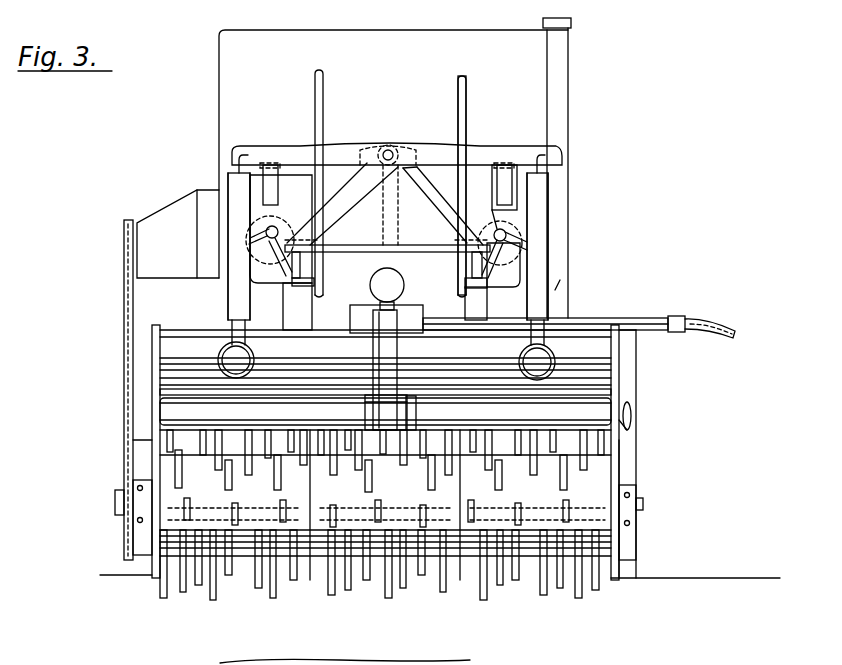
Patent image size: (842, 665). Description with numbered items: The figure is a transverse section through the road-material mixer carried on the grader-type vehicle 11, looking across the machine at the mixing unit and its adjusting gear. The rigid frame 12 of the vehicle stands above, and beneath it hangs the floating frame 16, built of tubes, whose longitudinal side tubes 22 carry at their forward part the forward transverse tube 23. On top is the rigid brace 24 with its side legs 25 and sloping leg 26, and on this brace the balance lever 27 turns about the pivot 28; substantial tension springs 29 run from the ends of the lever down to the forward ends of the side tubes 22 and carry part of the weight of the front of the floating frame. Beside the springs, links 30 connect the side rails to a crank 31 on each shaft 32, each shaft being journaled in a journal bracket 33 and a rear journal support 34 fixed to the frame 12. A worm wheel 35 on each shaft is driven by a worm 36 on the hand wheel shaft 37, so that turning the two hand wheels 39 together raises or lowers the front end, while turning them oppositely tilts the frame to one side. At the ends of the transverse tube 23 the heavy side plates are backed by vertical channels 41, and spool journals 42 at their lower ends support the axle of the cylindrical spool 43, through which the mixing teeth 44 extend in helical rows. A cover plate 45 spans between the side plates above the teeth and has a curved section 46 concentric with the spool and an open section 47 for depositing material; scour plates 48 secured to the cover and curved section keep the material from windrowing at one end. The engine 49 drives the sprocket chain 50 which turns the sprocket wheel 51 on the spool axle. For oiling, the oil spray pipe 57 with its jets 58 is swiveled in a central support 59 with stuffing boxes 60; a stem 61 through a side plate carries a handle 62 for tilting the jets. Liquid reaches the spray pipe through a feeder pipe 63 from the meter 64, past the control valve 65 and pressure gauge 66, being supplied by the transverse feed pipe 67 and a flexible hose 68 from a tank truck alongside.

The vehicle 11 is at (628, 184).
The frame 12 is at (470, 262).
The floating frame 16 is at (650, 298).
The longitudinal side tubes 22 is at (518, 361).
The forward transverse tube 23 is at (594, 365).
The rigid brace 24 is at (349, 160).
The side legs 25 is at (338, 221).
The sloping leg 26 is at (383, 228).
The balance lever 27 is at (420, 153).
The pivot 28 is at (388, 150).
The tension springs 29 is at (548, 216).
The links 30 is at (560, 276).
The crank 31 is at (553, 233).
The shaft 32 is at (279, 252).
The journal bracket 33 is at (498, 262).
The rear journal support 34 is at (490, 205).
The worm wheel 35 is at (502, 218).
The worm 36 is at (510, 166).
The hand wheel shaft 37 is at (488, 178).
The hand wheels 39 is at (465, 104).
The vertical channels 41 is at (630, 458).
The spool journals 42 is at (637, 508).
The cylindrical spool 43 is at (606, 518).
The mixing teeth 44 is at (628, 526).
The cover plate 45 is at (270, 384).
The curved section 46 is at (190, 478).
The open section 47 is at (368, 508).
The scour plates 48 is at (465, 478).
The engine 49 is at (578, 72).
The sprocket chain 50 is at (124, 356).
The sprocket wheel 51 is at (125, 545).
The oil spray pipe 57 is at (385, 414).
The jets 58 is at (427, 413).
The central support 59 is at (365, 384).
The stuffing boxes 60 is at (415, 395).
The stem 61 is at (632, 412).
The handle 62 is at (622, 430).
The feeder pipe 63 is at (400, 320).
The meter 64 is at (372, 333).
The control valve 65 is at (372, 305).
The pressure gauge 66 is at (396, 280).
The transverse feed pipe 67 is at (582, 320).
The flexible hose 68 is at (712, 322).